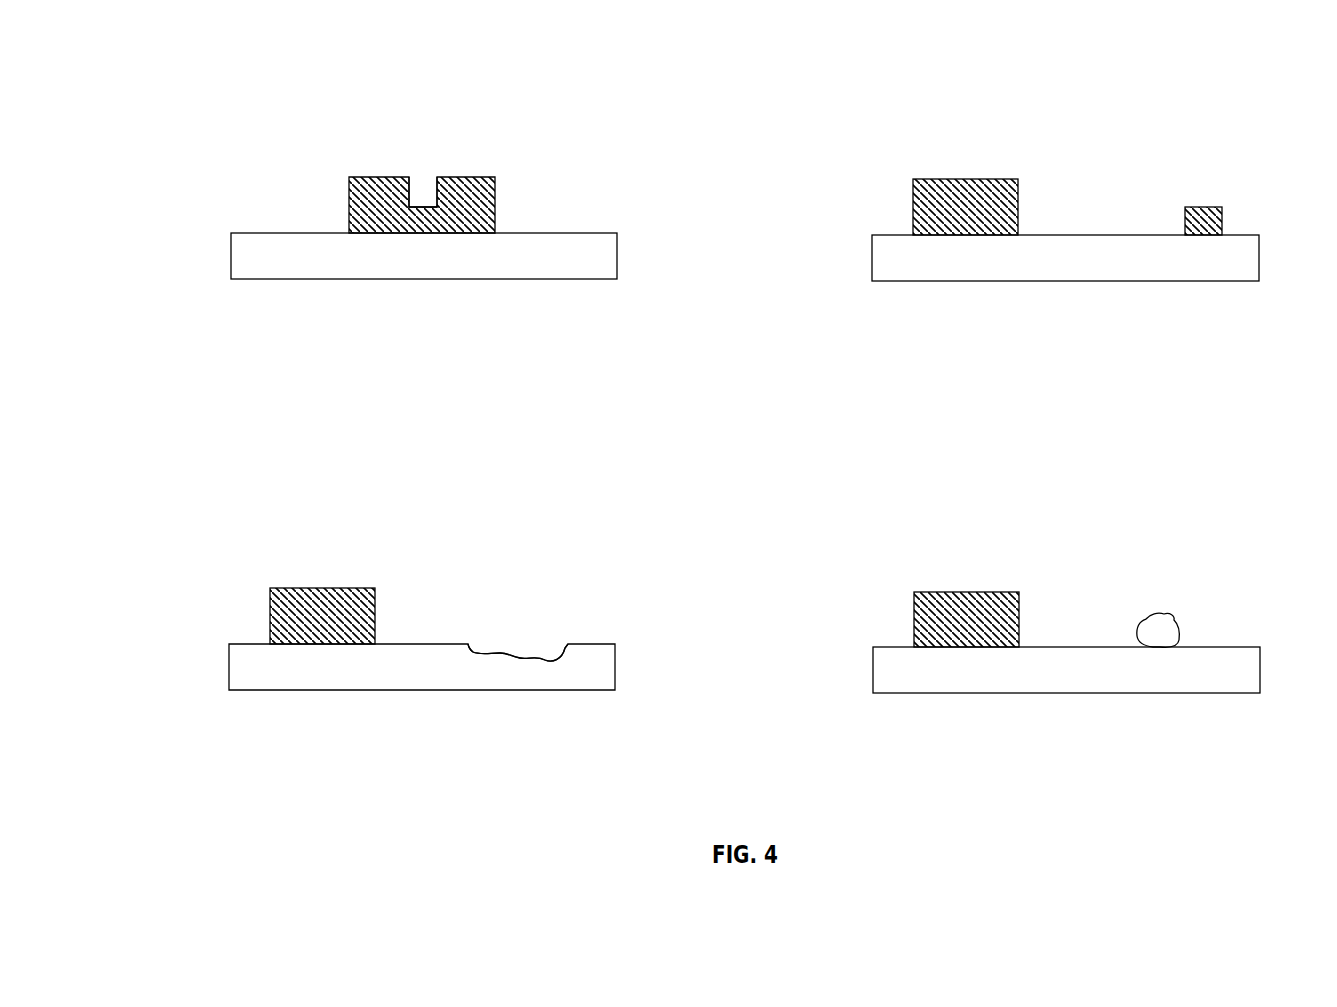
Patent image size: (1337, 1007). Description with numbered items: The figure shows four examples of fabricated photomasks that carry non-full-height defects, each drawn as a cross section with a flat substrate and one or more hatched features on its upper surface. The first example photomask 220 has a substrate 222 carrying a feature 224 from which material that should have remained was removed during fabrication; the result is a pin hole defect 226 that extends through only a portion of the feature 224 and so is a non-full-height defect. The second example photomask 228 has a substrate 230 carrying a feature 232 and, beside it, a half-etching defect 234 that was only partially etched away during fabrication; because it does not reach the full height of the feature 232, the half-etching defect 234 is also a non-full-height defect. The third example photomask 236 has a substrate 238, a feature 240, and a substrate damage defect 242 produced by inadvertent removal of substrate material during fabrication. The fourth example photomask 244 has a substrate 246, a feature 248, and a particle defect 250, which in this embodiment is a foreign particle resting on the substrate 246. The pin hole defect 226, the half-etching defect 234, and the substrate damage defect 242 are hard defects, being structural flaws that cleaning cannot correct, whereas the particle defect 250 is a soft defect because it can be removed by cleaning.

The first example photomask 220 is at (293, 106).
The substrate 222 is at (508, 281).
The feature 224 is at (348, 200).
The pin hole defect 226 is at (420, 170).
The second example photomask 228 is at (920, 109).
The substrate 230 is at (1072, 282).
The feature 232 is at (912, 201).
The half-etching defect 234 is at (1222, 213).
The third example photomask 236 is at (274, 525).
The substrate 238 is at (323, 692).
The feature 240 is at (269, 607).
The substrate damage defect 242 is at (510, 636).
The fourth example photomask 244 is at (915, 526).
The substrate 246 is at (1067, 695).
The feature 248 is at (913, 604).
The particle defect 250 is at (1175, 621).